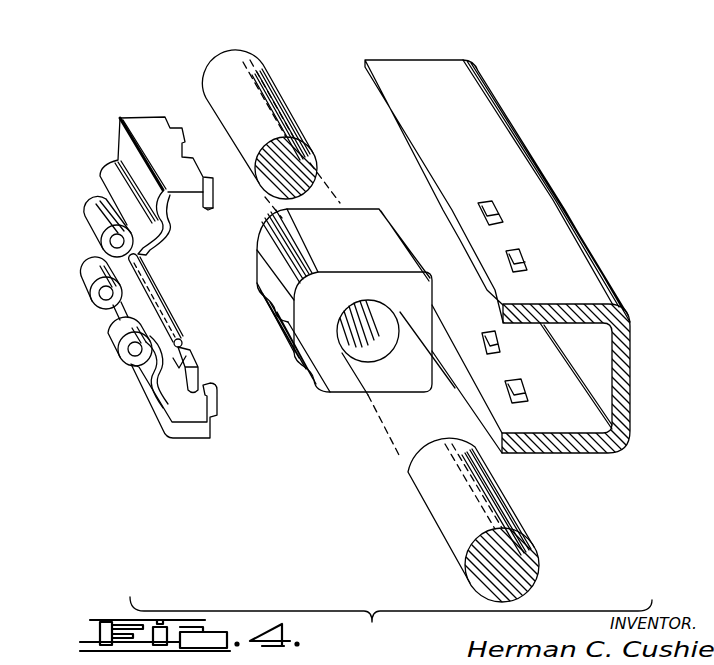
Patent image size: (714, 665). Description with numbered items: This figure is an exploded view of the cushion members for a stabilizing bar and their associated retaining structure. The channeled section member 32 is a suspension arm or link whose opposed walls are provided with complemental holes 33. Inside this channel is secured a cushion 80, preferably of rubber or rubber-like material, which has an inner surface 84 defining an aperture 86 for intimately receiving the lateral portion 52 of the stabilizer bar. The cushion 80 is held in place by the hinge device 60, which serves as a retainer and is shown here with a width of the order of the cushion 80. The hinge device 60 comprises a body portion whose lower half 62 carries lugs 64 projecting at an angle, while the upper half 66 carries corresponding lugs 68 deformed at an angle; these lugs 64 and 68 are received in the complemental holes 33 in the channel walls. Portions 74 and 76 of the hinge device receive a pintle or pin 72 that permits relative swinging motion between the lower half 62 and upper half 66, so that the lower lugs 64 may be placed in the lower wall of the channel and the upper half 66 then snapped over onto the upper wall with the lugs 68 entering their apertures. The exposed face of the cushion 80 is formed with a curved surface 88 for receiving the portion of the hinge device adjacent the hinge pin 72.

The channeled section member 32 is at (530, 260).
The complemental holes 33 is at (493, 207).
The lateral portion 52 is at (270, 80).
The hinge device 60 is at (151, 277).
The lower half 62 is at (163, 440).
The lugs 64 is at (219, 402).
The upper half 66 is at (148, 117).
The lugs 68 is at (207, 214).
The pintle or pin 72 is at (160, 291).
The portions of the hinge device 74 is at (90, 290).
The portions of the hinge device 76 is at (98, 237).
The cushion 80 is at (343, 333).
The inner surface 84 is at (334, 338).
The aperture 86 is at (375, 308).
The curved surface 88 is at (292, 300).